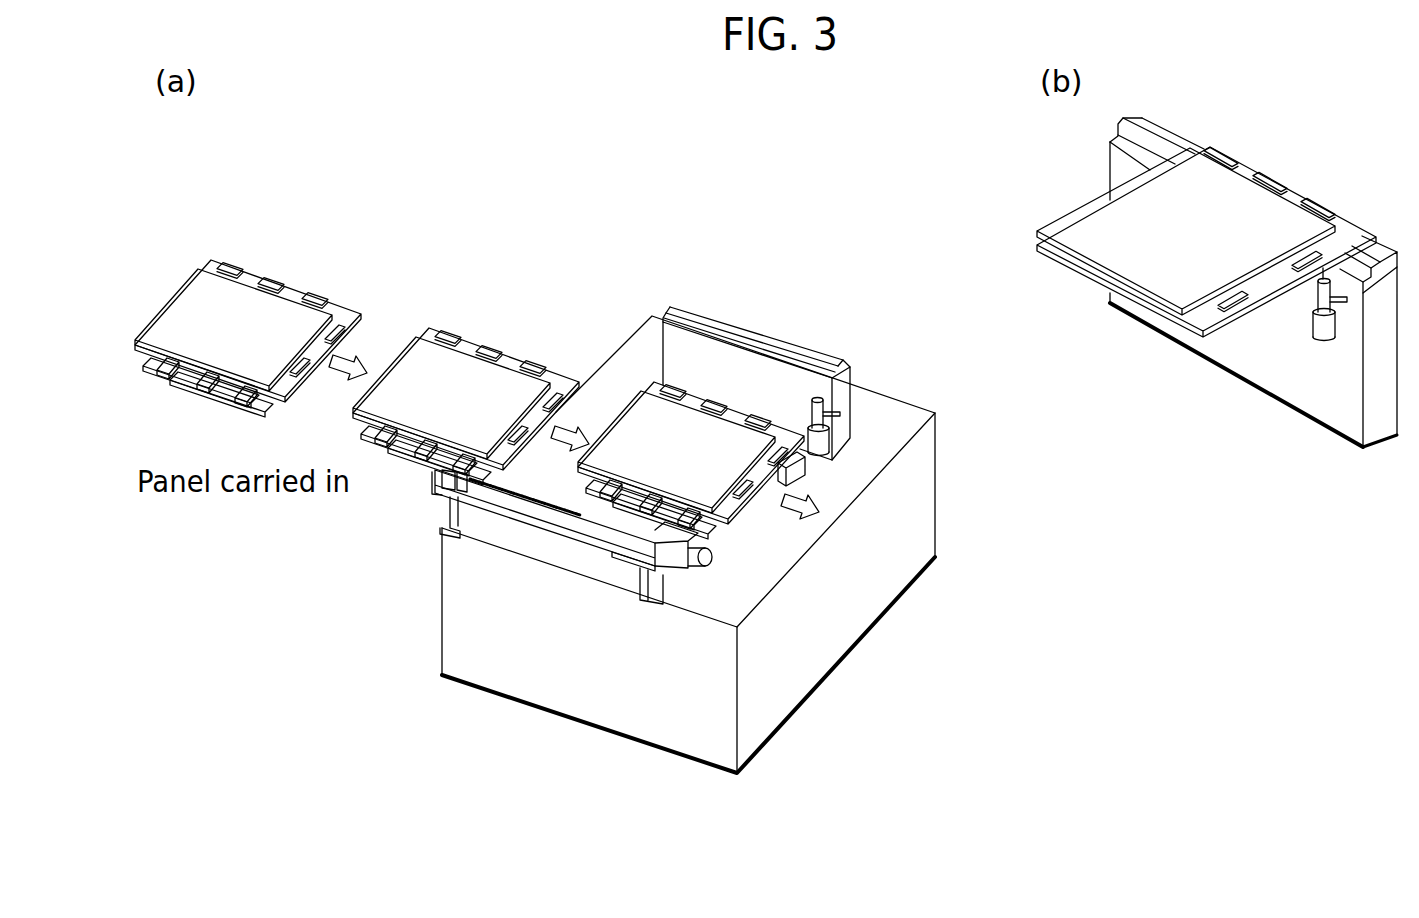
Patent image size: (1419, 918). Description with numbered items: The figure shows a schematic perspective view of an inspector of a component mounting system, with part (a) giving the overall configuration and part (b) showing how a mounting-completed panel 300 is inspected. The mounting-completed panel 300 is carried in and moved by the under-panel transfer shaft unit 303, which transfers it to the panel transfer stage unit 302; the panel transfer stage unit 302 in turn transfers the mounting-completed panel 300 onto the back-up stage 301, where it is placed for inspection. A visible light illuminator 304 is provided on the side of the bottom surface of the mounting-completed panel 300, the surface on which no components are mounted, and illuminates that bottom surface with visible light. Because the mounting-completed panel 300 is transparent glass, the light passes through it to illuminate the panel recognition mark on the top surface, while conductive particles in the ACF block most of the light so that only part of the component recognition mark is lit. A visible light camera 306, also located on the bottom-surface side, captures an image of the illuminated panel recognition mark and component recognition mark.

The mounting-completed panel 300 is at (435, 378).
The back-up stage 301 is at (700, 313).
The panel transfer stage unit 302 is at (783, 480).
The under-panel transfer shaft unit 303 is at (527, 512).
The visible light illuminator 304 is at (833, 417).
The visible light camera 306 is at (827, 440).